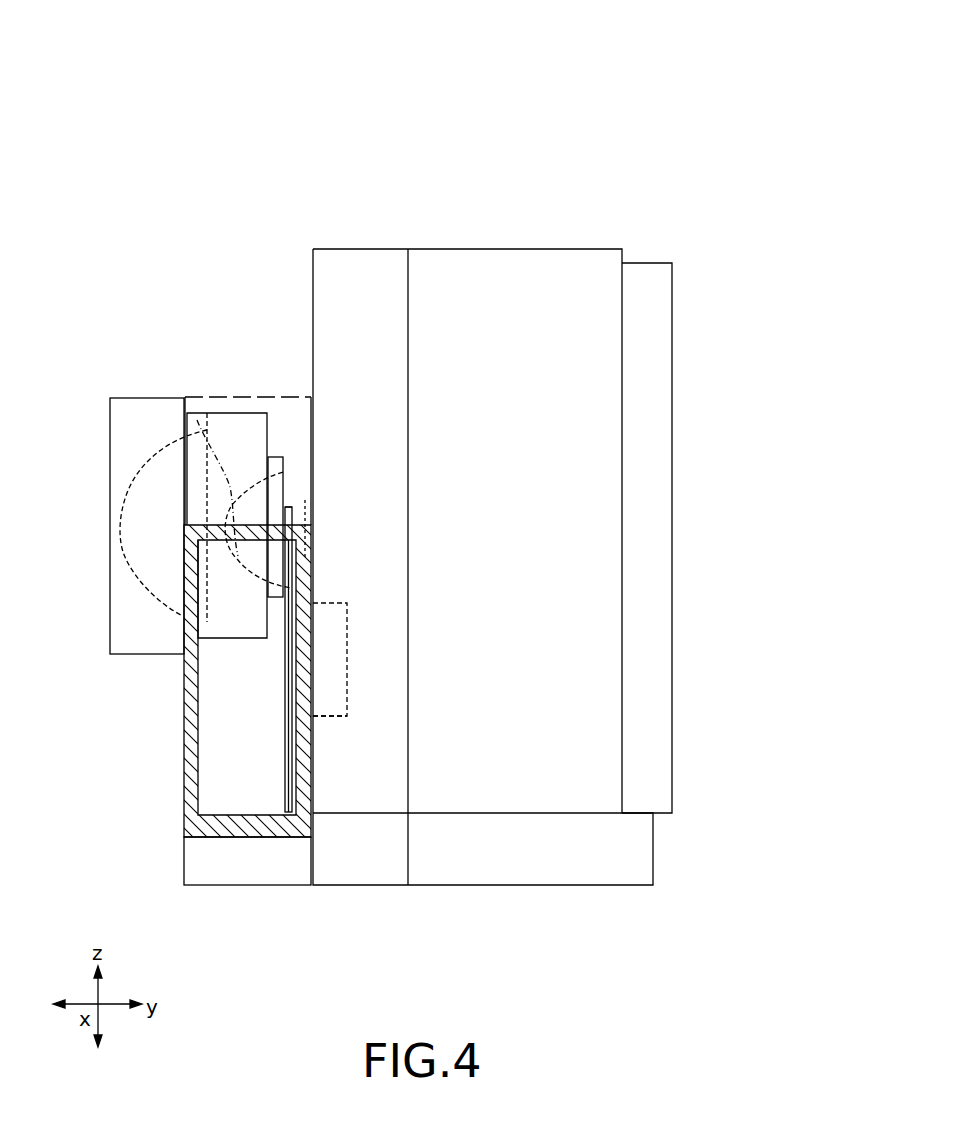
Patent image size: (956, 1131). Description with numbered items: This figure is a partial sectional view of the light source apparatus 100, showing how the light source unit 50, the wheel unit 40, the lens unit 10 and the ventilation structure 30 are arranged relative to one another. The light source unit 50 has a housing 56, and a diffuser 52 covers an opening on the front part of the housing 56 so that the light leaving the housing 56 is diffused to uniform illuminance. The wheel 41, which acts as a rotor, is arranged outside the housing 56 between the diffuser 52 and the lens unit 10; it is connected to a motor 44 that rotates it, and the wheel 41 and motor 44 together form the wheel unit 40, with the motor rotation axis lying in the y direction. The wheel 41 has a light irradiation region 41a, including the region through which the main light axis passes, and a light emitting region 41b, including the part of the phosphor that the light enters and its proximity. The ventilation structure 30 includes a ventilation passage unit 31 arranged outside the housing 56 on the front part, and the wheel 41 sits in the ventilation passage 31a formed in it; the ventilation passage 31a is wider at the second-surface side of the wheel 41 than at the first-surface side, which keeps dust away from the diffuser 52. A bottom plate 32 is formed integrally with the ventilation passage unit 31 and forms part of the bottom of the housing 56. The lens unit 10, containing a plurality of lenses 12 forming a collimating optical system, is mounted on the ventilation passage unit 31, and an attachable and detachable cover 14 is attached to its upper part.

The light source apparatus 100 is at (434, 118).
The lens unit 10 is at (142, 398).
The lens 12 is at (140, 470).
The cover 14 is at (251, 397).
The ventilation structure 30 is at (183, 628).
The ventilation passage unit 31 is at (185, 740).
The ventilation passage 31a is at (230, 697).
The bottom plate 32 is at (250, 862).
The wheel unit 40 is at (325, 603).
The wheel 41 is at (285, 790).
The light irradiation region 41a is at (312, 527).
The light emitting region 41b is at (283, 520).
The motor 44 is at (330, 718).
The light source unit 50 is at (511, 249).
The diffuser 52 is at (312, 512).
The housing 56 is at (362, 268).